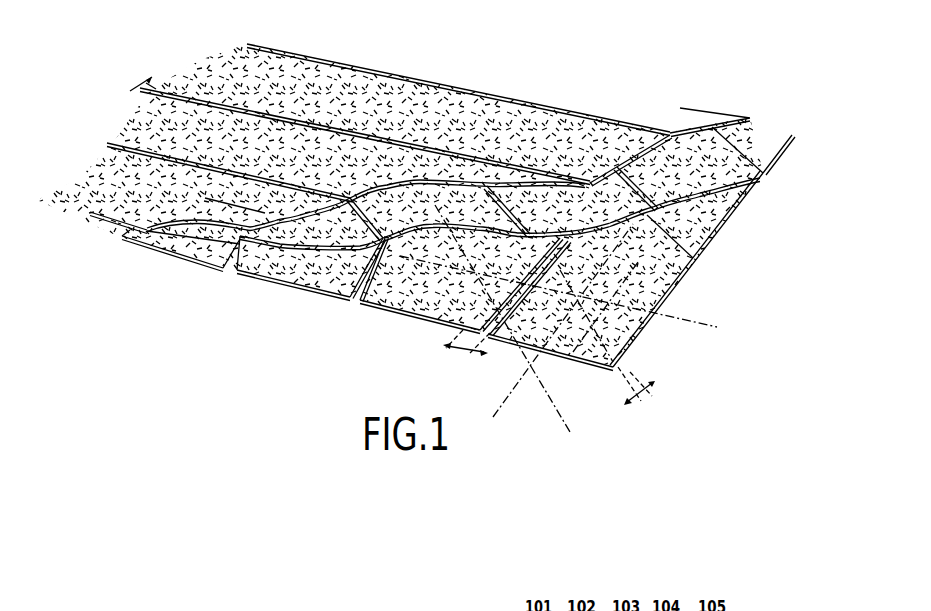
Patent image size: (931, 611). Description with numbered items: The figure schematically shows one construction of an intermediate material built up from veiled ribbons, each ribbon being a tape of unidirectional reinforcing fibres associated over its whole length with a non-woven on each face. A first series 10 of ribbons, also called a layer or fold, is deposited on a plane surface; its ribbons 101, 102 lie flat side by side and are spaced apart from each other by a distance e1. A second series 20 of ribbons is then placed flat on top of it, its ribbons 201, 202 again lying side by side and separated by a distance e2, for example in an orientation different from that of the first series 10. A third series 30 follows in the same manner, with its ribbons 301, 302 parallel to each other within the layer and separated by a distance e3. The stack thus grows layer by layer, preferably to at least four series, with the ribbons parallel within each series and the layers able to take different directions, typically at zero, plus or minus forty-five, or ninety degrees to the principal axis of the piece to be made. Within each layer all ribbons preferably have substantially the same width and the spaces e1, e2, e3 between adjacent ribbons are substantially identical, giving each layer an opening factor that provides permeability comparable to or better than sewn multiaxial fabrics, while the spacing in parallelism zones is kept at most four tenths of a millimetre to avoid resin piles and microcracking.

The first series of ribbons 10 is at (646, 341).
The ribbon of the first series 101 is at (578, 350).
The ribbon of the first series 102 is at (422, 300).
The second series of ribbons 20 is at (732, 141).
The ribbon of the second series 201 is at (750, 187).
The ribbon of the second series 202 is at (697, 258).
The third series of ribbons 30 is at (213, 66).
The ribbon of the third series 301 is at (94, 166).
The ribbon of the third series 302 is at (157, 118).
The spacing between adjacent ribbons of the first layer e1 is at (467, 350).
The spacing between adjacent ribbons of the second layer e2 is at (641, 394).
The spacing between adjacent ribbons of the third layer e3 is at (130, 91).